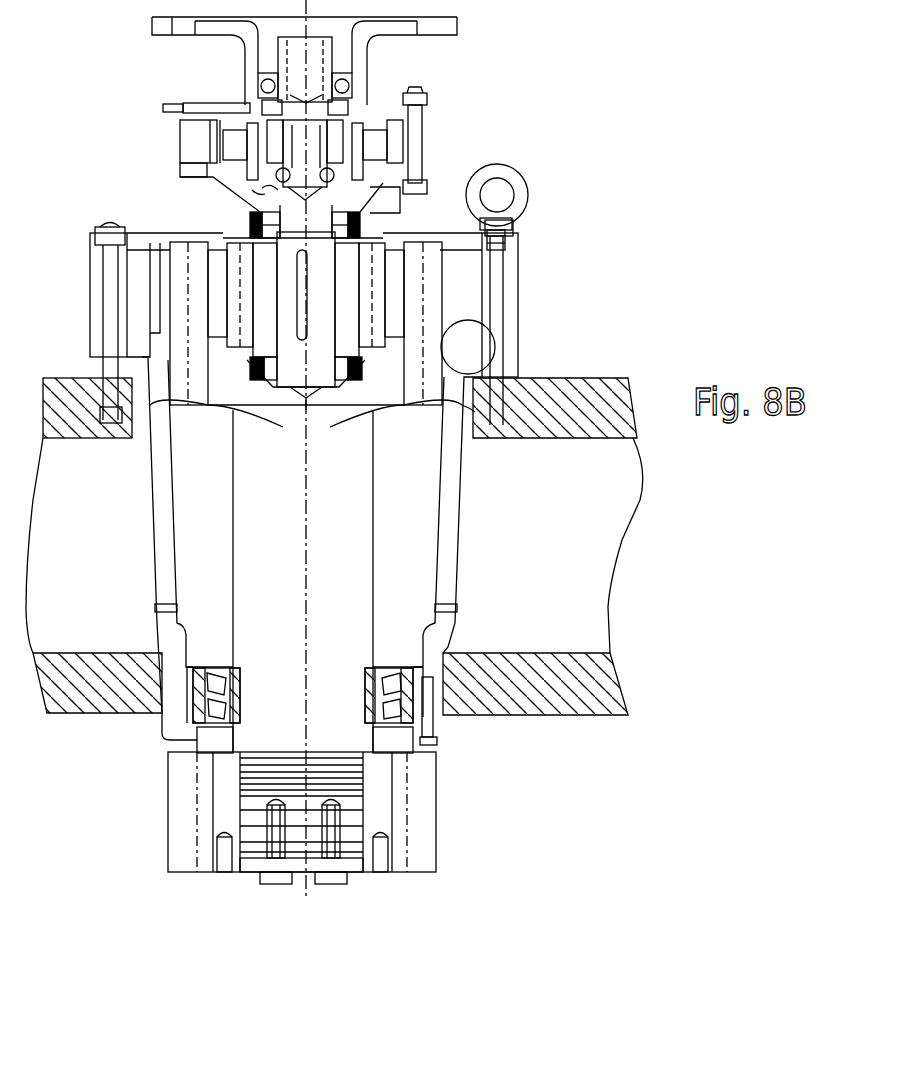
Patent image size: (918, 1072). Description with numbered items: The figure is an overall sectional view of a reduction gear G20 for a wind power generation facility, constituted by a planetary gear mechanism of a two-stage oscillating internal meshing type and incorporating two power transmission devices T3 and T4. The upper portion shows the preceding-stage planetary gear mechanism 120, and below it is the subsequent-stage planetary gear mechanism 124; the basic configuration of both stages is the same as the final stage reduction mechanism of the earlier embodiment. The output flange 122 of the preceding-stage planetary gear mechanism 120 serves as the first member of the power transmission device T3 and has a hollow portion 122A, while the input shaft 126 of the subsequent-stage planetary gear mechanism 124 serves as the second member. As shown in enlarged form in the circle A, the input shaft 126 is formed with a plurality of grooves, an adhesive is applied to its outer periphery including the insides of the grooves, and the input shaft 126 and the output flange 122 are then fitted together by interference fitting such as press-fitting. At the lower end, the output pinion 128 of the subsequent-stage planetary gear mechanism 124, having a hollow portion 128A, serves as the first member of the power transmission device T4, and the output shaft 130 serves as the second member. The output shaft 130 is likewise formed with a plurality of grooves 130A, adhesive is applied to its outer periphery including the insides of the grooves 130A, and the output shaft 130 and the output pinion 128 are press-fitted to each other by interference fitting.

The preceding-stage planetary gear mechanism 120 is at (440, 116).
The output flange 122 is at (400, 200).
The hollow portion 122A is at (253, 218).
The power transmission device T3 is at (263, 195).
The circle A is at (260, 192).
The input shaft 126 is at (423, 212).
The reduction gear G20 is at (543, 182).
The subsequent-stage planetary gear mechanism 124 is at (533, 332).
The output shaft 130 is at (345, 568).
The power transmission device T4 is at (367, 795).
The output pinion 128 is at (420, 840).
The grooves 130A is at (257, 845).
The hollow portion 128A is at (355, 838).